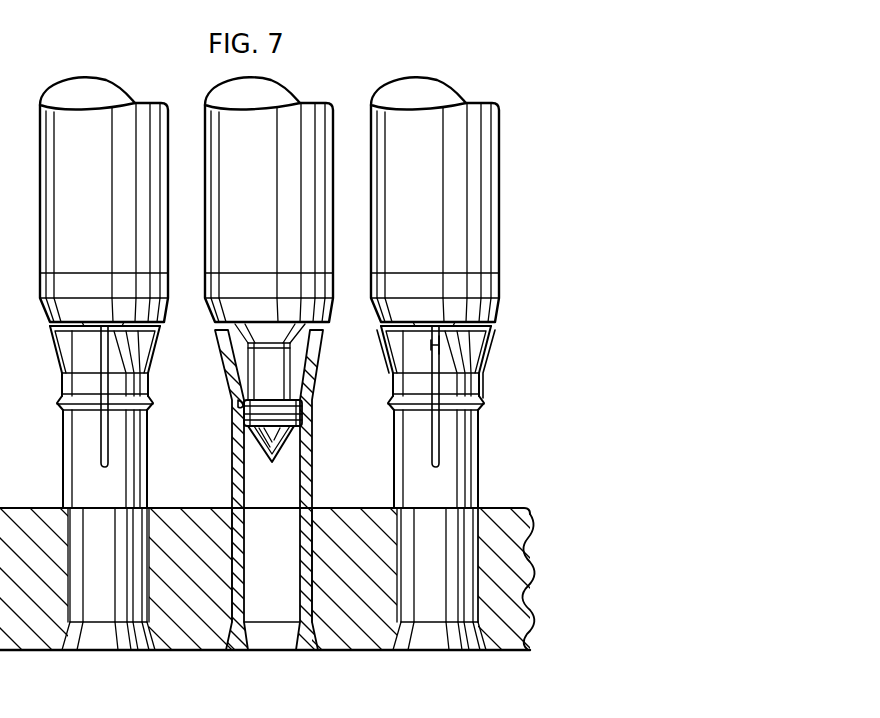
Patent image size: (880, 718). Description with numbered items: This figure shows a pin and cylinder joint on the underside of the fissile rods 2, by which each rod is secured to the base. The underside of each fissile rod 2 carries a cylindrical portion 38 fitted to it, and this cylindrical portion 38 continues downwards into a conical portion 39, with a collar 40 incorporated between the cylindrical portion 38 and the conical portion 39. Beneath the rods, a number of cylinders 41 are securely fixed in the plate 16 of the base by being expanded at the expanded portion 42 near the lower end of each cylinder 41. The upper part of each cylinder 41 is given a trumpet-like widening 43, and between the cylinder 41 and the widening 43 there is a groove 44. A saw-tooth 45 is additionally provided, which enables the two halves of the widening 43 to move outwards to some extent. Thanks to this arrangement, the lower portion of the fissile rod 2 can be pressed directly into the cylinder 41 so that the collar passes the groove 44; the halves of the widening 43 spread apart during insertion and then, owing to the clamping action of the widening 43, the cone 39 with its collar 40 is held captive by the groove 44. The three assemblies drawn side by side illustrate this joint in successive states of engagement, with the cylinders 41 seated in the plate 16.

The fissile rod 2 is at (506, 206).
The plate 16 is at (351, 628).
The cylindrical portion 38 is at (500, 363).
The conical portion 39 is at (493, 443).
The collar 40 is at (493, 414).
The cylinder 41 is at (495, 479).
The expanded portion 42 is at (246, 644).
The trumpet-like widening 43 is at (485, 346).
The groove 44 is at (240, 403).
The saw-tooth 45 is at (437, 348).